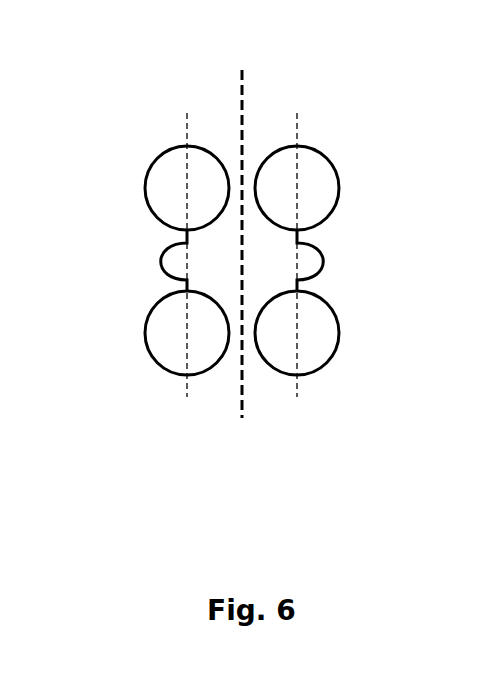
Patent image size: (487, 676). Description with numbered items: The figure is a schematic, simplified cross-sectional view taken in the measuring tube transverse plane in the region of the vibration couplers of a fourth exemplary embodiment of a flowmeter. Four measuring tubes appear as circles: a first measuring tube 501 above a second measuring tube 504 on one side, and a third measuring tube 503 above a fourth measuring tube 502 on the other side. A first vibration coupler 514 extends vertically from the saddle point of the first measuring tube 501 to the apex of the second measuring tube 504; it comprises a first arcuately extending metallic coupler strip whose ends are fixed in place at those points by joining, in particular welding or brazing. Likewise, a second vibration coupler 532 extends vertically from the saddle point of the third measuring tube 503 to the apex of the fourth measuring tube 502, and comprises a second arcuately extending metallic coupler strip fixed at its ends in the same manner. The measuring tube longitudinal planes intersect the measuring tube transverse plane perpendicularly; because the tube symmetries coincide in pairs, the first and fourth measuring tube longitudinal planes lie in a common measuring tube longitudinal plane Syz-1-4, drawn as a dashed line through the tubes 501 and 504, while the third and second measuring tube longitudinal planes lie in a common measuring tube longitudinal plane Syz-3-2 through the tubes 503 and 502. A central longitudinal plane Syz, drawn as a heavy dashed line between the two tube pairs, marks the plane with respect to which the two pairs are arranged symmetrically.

The first measuring tube 501 is at (168, 150).
The fourth measuring tube 502 is at (330, 362).
The third measuring tube 503 is at (328, 157).
The second measuring tube 504 is at (155, 362).
The first vibration coupler 514 is at (163, 255).
The second vibration coupler 532 is at (325, 260).
The measuring tube longitudinal plane Syz is at (242, 82).
The common measuring tube longitudinal plane Syz-1-4 is at (187, 392).
The common measuring tube longitudinal plane Syz-3-2 is at (297, 392).